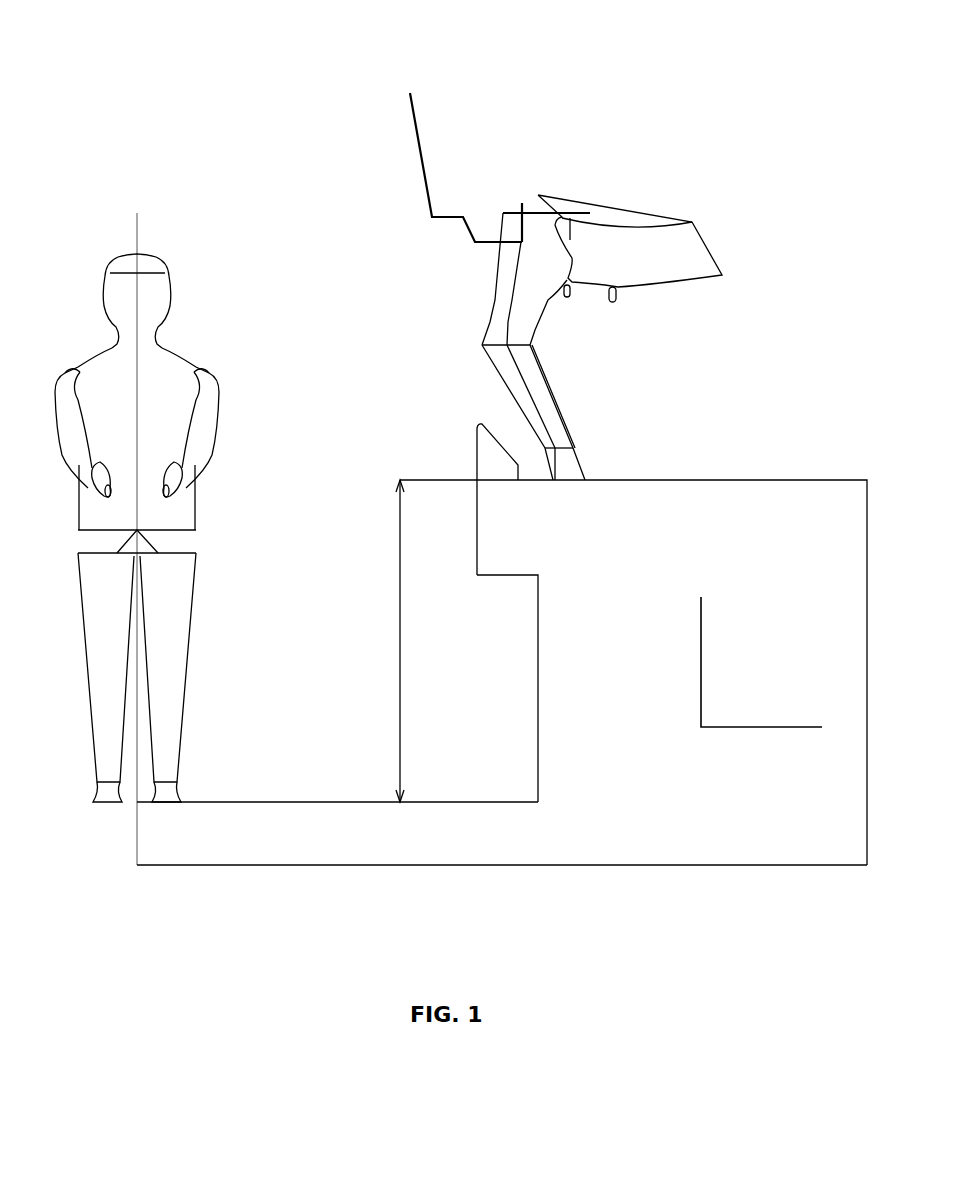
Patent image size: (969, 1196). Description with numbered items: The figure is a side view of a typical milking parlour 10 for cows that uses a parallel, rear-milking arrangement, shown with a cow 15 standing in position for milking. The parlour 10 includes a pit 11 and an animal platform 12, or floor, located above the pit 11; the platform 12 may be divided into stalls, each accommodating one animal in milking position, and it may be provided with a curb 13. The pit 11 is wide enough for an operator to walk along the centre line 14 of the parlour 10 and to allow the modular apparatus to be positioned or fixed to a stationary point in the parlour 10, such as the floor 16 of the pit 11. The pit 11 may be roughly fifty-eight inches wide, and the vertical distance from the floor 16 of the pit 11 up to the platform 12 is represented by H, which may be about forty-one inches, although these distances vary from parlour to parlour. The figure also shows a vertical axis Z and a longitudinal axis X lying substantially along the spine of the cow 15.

The milking parlour 10 is at (285, 125).
The pit 11 is at (303, 763).
The animal platform 12 is at (735, 478).
The curb 13 is at (477, 448).
The centre line 14 is at (140, 233).
The cow 15 is at (635, 240).
The floor 16 is at (235, 808).